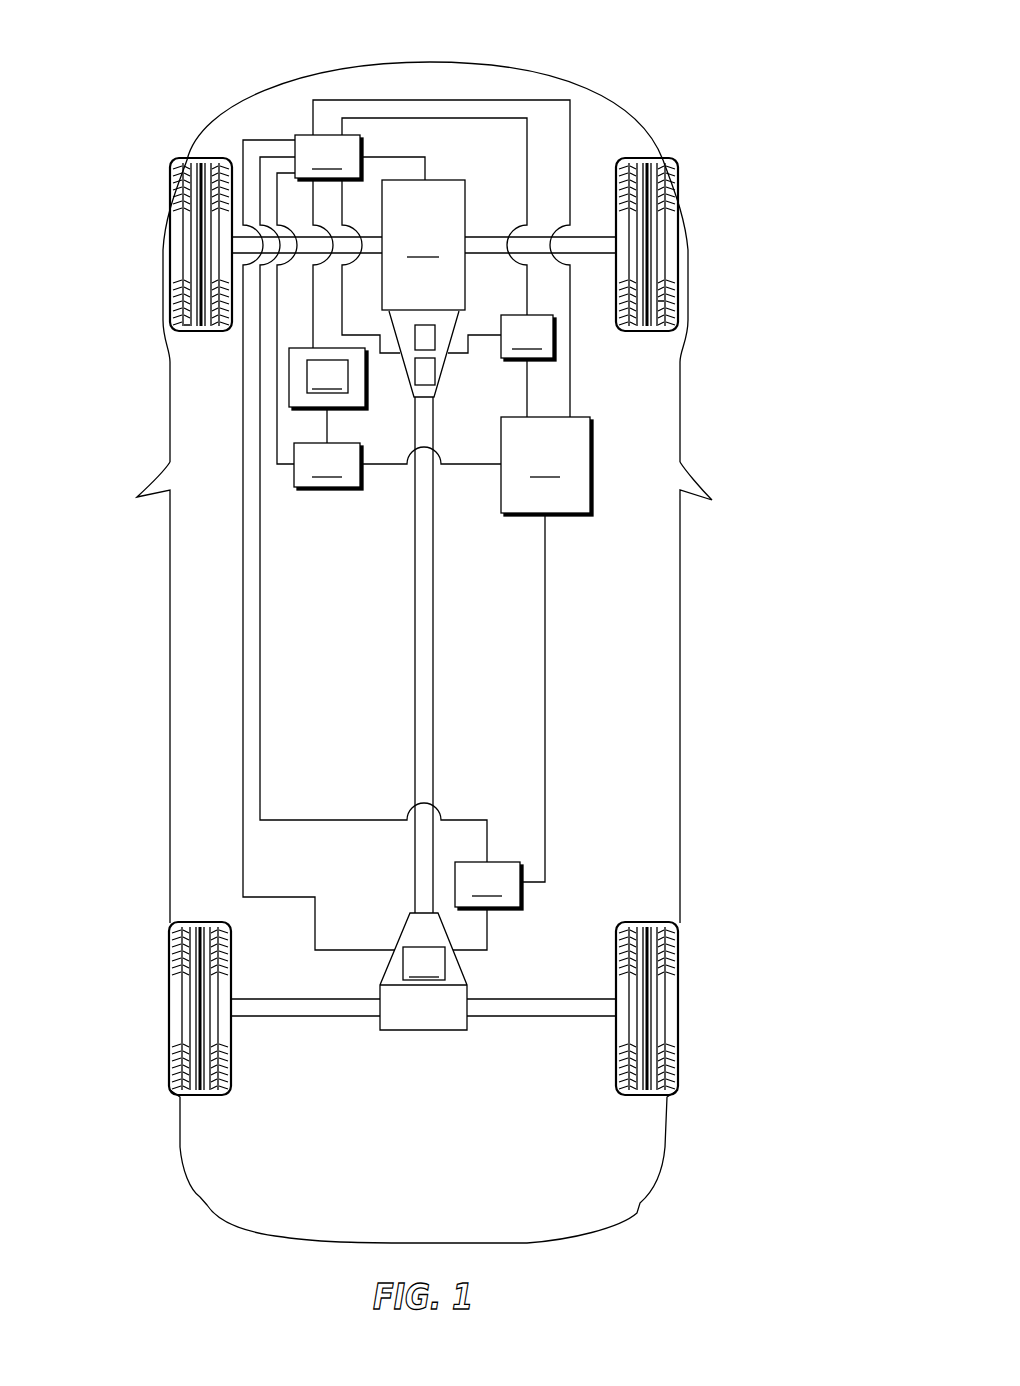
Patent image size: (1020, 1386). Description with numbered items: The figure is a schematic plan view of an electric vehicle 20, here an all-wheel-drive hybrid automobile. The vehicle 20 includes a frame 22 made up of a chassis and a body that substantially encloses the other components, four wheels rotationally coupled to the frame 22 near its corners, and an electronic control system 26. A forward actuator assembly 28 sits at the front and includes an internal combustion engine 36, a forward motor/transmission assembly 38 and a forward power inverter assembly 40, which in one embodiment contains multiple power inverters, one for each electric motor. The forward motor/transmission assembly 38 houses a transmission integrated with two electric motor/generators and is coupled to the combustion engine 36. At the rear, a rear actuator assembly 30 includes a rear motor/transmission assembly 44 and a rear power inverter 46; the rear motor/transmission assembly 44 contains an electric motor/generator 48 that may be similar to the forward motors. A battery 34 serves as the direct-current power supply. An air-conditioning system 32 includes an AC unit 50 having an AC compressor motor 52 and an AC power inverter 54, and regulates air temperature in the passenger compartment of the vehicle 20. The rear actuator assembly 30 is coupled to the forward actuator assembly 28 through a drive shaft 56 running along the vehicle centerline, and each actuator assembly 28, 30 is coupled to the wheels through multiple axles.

The electric vehicle 20 is at (658, 38).
The frame 22 is at (478, 62).
The electronic control system 26 is at (329, 158).
The forward actuator assembly 28 is at (476, 216).
The rear actuator assembly 30 is at (490, 979).
The air-conditioning system 32 is at (302, 424).
The battery 34 is at (547, 466).
The internal combustion engine 36 is at (423, 245).
The forward motor/transmission assembly 38 is at (447, 356).
The forward power inverter assembly 40 is at (528, 338).
The rear motor/transmission assembly 44 is at (402, 933).
The rear power inverter 46 is at (489, 886).
The electric motor/generator 48 is at (424, 963).
The AC unit 50 is at (289, 388).
The AC compressor motor 52 is at (327, 376).
The AC power inverter 54 is at (328, 466).
The drive shaft 56 is at (433, 726).